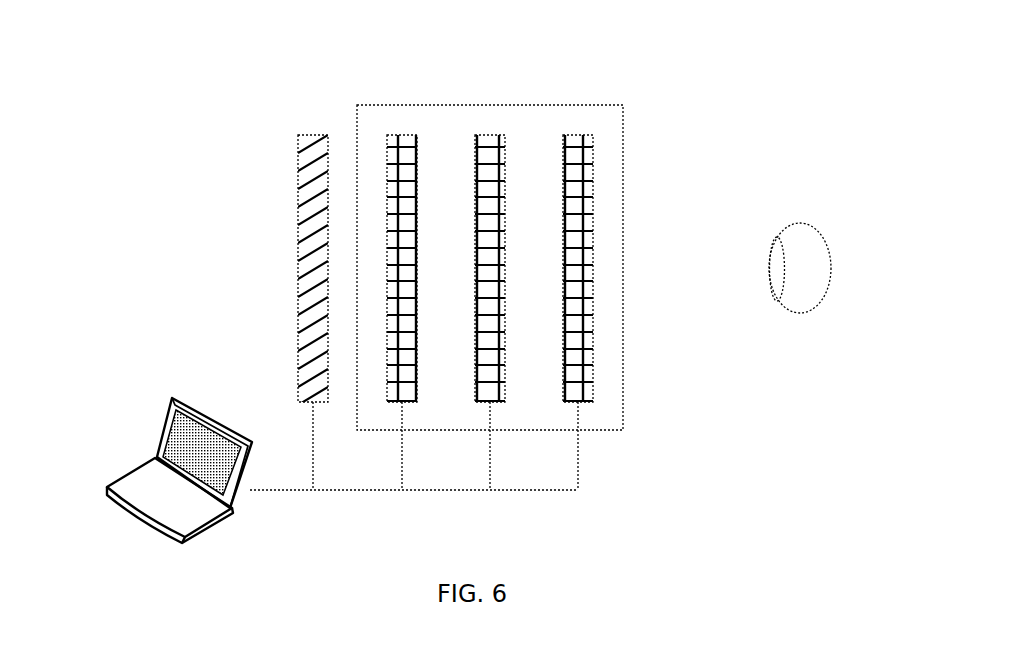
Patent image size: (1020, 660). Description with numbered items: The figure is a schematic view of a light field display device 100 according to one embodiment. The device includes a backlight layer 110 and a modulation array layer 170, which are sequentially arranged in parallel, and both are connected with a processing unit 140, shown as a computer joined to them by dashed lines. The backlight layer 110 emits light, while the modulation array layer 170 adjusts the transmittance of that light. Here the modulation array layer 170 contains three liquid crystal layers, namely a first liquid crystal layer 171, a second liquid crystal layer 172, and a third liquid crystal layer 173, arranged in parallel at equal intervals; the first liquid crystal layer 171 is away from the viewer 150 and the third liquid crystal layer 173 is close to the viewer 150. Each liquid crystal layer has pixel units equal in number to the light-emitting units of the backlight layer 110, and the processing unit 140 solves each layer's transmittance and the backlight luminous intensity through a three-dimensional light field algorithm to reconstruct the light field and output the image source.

The light field display device 100 is at (788, 122).
The backlight layer 110 is at (312, 133).
The processing unit 140 is at (150, 460).
The viewer 150 is at (827, 250).
The modulation array layer 170 is at (623, 163).
The first liquid crystal layer 171 is at (400, 135).
The second liquid crystal layer 172 is at (480, 135).
The third liquid crystal layer 173 is at (573, 135).